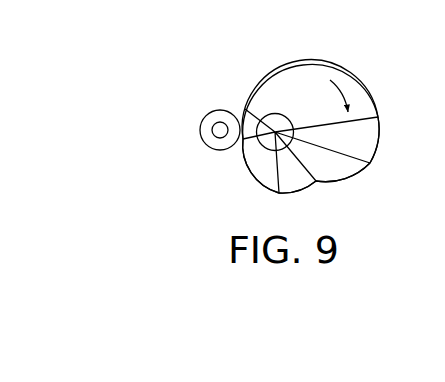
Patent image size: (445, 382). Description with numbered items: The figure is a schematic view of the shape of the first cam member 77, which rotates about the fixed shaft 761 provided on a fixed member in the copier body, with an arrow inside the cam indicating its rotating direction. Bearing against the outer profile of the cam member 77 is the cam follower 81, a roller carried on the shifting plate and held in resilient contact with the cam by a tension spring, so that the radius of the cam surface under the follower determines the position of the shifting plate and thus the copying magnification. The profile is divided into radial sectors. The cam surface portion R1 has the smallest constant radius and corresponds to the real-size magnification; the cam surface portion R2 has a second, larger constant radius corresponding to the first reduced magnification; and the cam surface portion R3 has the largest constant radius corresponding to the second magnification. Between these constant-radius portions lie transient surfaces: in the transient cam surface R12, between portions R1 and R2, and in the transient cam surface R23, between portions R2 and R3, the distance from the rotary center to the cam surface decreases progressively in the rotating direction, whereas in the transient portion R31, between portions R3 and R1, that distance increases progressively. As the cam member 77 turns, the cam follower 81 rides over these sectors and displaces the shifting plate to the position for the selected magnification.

The first cam member 77 is at (359, 111).
The fixed shaft 761 is at (273, 114).
The cam follower 81 is at (200, 127).
The cam surface portion R1 is at (245, 109).
The transient cam surface R12 is at (256, 183).
The cam surface portion R2 is at (300, 192).
The transient cam surface R23 is at (345, 179).
The cam surface portion R3 is at (381, 140).
The transient portion R31 is at (358, 82).